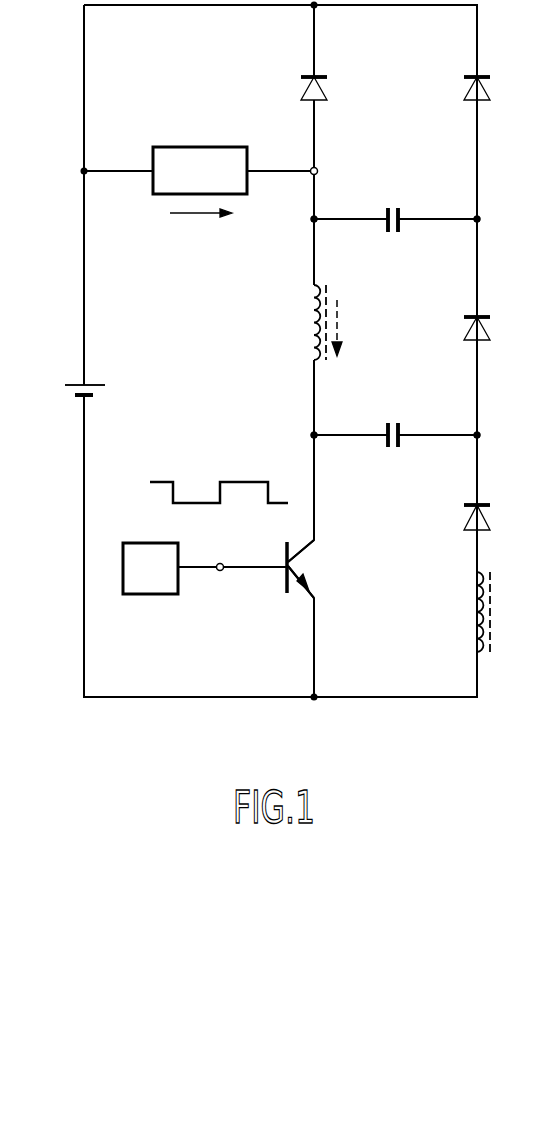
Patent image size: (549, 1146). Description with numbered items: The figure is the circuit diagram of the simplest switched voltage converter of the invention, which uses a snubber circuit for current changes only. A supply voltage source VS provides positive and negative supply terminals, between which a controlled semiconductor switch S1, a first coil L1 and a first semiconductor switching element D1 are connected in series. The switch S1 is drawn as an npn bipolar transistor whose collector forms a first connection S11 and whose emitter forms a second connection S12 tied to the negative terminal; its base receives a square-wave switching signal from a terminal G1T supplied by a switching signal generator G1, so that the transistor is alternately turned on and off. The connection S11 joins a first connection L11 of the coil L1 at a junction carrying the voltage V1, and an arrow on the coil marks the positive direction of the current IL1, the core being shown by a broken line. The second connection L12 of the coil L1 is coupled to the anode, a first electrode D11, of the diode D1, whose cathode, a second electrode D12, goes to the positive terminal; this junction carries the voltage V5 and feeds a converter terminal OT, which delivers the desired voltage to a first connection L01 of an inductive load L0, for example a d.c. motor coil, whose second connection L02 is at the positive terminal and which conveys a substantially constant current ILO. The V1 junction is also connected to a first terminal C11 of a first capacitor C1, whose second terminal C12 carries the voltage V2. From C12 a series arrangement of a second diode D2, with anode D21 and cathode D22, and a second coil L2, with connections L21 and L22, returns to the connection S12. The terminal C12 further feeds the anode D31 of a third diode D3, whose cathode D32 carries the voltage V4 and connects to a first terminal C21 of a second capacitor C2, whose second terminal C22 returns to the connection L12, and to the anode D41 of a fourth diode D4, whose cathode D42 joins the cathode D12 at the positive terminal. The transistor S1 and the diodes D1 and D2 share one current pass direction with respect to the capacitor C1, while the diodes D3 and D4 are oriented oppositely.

The first semiconductor switching element D1 is at (325, 87).
The first electrode of diode D1 D11 is at (318, 103).
The second electrode of diode D1 D12 is at (316, 75).
The second semiconductor switching element D2 is at (466, 519).
The first electrode of diode D2 D21 is at (480, 533).
The second electrode of diode D2 D22 is at (481, 503).
The third semiconductor switching element D3 is at (492, 326).
The first electrode of diode D3 D31 is at (481, 343).
The second electrode of diode D3 D32 is at (480, 315).
The fourth semiconductor switching element D4 is at (489, 87).
The first electrode of diode D4 D41 is at (481, 103).
The second electrode of diode D4 D42 is at (480, 75).
The inductive load L0 is at (210, 147).
The first connection of inductive load L01 is at (249, 167).
The second connection of inductive load L02 is at (150, 167).
The load current ILO is at (207, 216).
The converter terminal OT is at (318, 172).
The voltage at junction point between L12 and D11 V5 is at (311, 219).
The voltage at cathode D32 V4 is at (480, 219).
The voltage at junction of S11 and L11 V1 is at (311, 435).
The voltage at capacitor terminal C12 V2 is at (480, 435).
The first capacitor C1 is at (391, 422).
The first terminal of first capacitor C11 is at (386, 446).
The second terminal of first capacitor C12 is at (401, 440).
The second capacitor C2 is at (392, 206).
The first terminal of second capacitor C21 is at (400, 226).
The second terminal of second capacitor C22 is at (385, 227).
The first coil L1 is at (317, 321).
The first connection of first coil L11 is at (313, 361).
The second connection of first coil L12 is at (313, 285).
The current through first coil IL1 is at (340, 323).
The second coil L2 is at (480, 612).
The first connection of second coil L21 is at (476, 573).
The second connection of second coil L22 is at (477, 652).
The supply voltage source VS is at (96, 390).
The controlled semiconductor switch S1 is at (284, 582).
The first connection of switch S1 S11 is at (317, 543).
The second connection of switch S1 S12 is at (317, 594).
The switching signal generator G1 is at (155, 596).
The switching signal terminal G1T is at (207, 505).